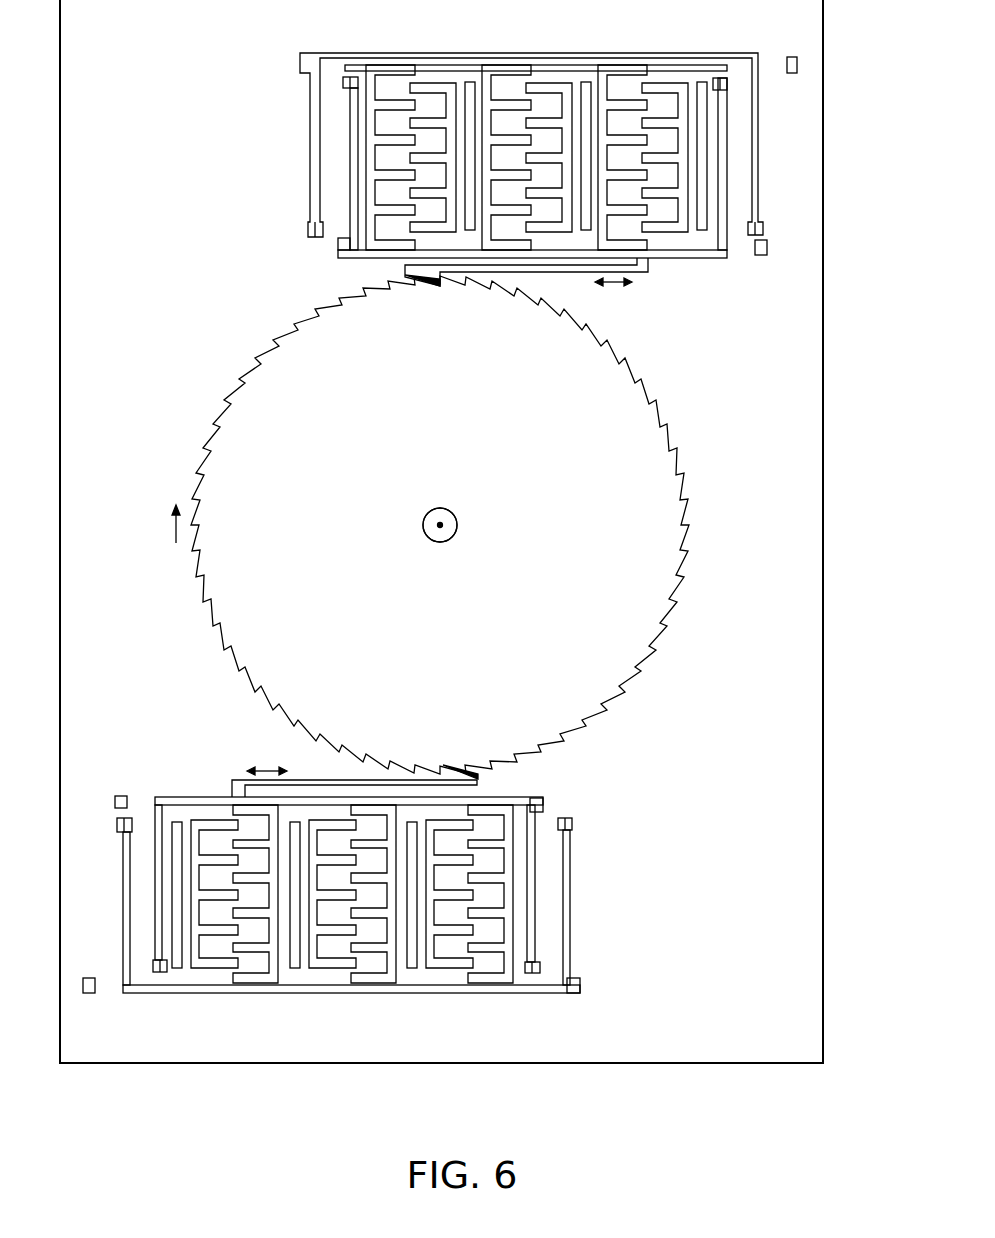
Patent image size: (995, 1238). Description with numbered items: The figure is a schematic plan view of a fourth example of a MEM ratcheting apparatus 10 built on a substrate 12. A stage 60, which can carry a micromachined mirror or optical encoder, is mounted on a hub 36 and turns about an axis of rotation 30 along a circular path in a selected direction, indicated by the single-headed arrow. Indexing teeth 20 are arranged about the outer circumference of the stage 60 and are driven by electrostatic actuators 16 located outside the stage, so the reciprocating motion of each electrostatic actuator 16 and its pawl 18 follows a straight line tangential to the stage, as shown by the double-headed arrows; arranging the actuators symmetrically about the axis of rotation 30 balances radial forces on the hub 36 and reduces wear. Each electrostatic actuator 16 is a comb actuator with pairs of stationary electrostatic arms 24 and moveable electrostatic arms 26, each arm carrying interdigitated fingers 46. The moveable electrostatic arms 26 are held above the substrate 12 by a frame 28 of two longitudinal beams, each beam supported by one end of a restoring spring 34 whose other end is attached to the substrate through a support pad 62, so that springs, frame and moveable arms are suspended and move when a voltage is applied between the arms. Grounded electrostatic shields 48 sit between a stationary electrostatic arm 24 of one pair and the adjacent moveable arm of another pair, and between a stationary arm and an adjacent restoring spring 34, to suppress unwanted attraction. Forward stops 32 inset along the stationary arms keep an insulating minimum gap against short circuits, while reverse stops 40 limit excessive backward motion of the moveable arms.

The MEM ratcheting apparatus 10 is at (843, 822).
The substrate 12 is at (737, 1023).
The electrostatic actuator 16 is at (284, 161).
The pawl 18 is at (477, 780).
The indexing teeth 20 is at (568, 749).
The stationary electrostatic arms 24 is at (325, 900).
The moveable electrostatic arms 26 is at (277, 980).
The frame 28 is at (427, 995).
The axis of rotation 30 is at (440, 525).
The forward stops 32 is at (120, 796).
The restoring spring 34 is at (570, 935).
The hub 36 is at (457, 523).
The reverse stops 40 is at (544, 805).
The interdigitated fingers 46 is at (212, 967).
The electrostatic shields 48 is at (178, 972).
The stage 60 is at (427, 676).
The support pad 62 is at (573, 823).